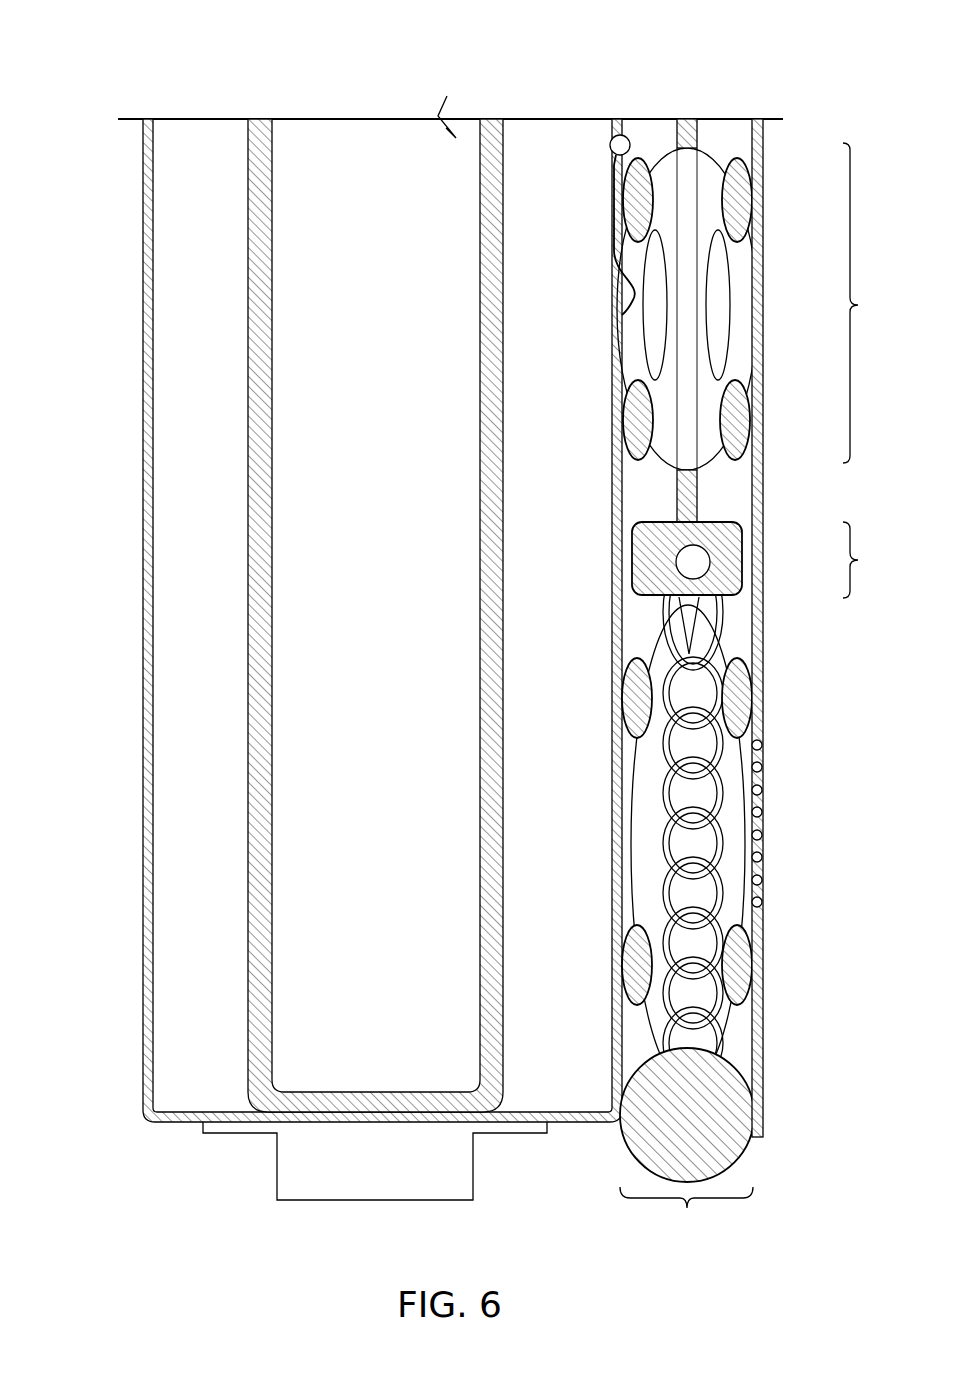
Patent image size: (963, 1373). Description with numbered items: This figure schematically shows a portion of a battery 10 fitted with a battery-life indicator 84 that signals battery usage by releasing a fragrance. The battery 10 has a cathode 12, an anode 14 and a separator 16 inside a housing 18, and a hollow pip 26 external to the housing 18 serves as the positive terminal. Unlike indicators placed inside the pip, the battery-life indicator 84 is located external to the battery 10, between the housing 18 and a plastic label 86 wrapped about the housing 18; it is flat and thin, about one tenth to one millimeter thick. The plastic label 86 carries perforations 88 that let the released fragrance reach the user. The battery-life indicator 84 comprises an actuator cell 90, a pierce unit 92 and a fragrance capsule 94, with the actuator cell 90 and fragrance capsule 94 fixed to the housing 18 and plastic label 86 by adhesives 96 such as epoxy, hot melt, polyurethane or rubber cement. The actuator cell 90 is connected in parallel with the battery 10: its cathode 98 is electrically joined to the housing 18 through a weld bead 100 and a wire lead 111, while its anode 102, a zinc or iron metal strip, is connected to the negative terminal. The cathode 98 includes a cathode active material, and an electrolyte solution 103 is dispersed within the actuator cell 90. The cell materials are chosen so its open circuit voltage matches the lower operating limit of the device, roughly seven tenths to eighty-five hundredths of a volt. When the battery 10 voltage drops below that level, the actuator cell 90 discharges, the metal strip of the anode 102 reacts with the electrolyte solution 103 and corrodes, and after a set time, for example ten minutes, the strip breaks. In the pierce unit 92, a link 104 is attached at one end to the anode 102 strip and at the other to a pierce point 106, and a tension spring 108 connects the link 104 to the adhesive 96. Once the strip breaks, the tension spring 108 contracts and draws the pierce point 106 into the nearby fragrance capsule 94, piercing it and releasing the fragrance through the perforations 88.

The battery 10 is at (115, 38).
The cathode 12 is at (342, 620).
The anode 14 is at (393, 1000).
The separator 16 is at (258, 138).
The housing 18 is at (150, 312).
The hollow pip 26 is at (412, 1187).
The battery-life indicator 84 is at (705, 654).
The plastic label 86 is at (758, 1077).
The perforations 88 is at (762, 745).
The actuator cell 90 is at (705, 297).
The pierce unit 92 is at (705, 550).
The fragrance capsule 94 is at (637, 783).
The adhesives 96 is at (747, 417).
The cathode 98 is at (722, 295).
The weld bead 100 is at (612, 141).
The anode 102 is at (690, 130).
The electrolyte solution 103 is at (660, 380).
The link 104 is at (722, 532).
The pierce point 106 is at (688, 607).
The tension spring 108 is at (722, 613).
The wire lead 111 is at (622, 302).